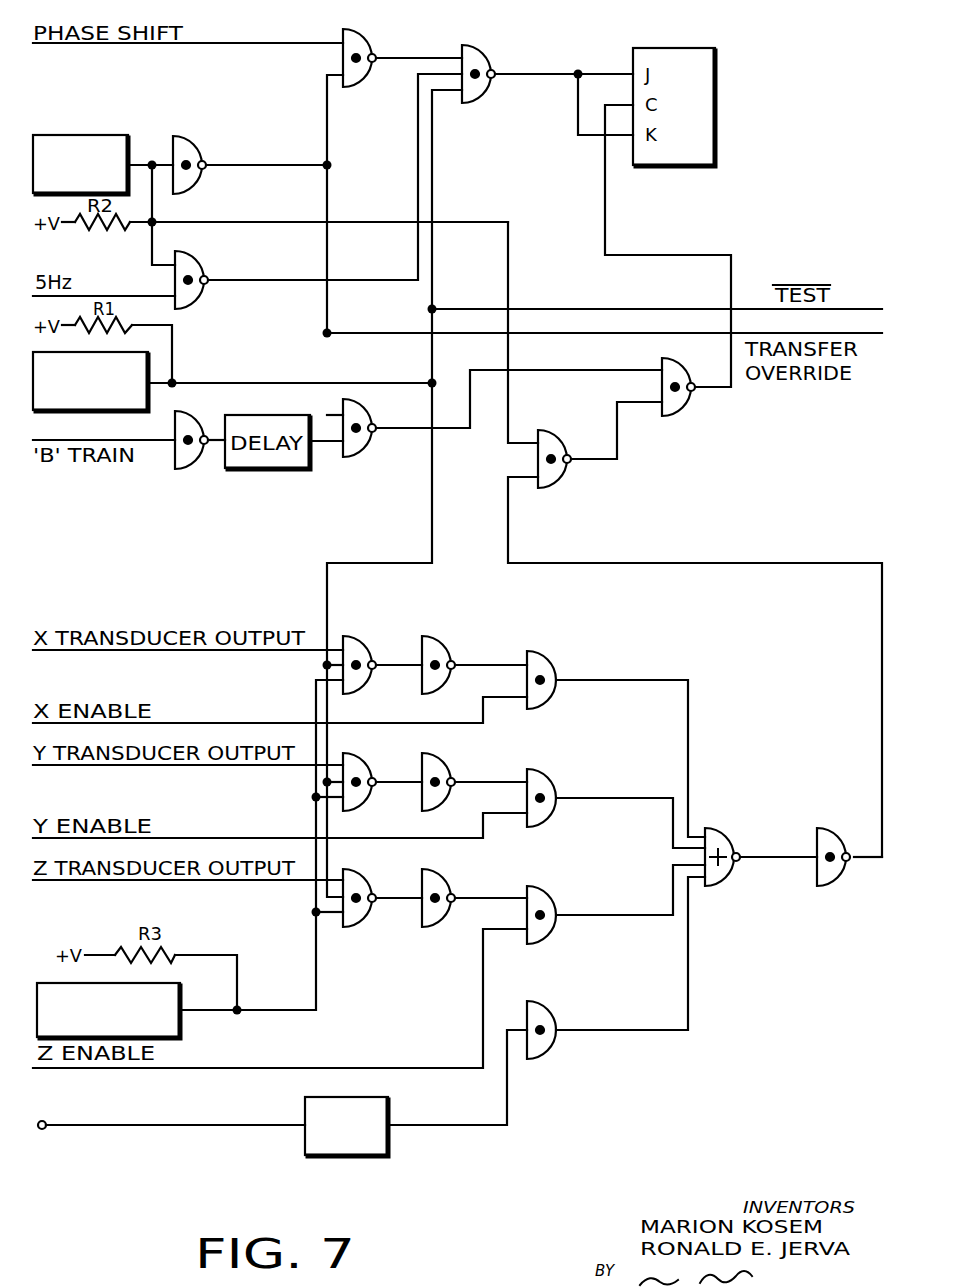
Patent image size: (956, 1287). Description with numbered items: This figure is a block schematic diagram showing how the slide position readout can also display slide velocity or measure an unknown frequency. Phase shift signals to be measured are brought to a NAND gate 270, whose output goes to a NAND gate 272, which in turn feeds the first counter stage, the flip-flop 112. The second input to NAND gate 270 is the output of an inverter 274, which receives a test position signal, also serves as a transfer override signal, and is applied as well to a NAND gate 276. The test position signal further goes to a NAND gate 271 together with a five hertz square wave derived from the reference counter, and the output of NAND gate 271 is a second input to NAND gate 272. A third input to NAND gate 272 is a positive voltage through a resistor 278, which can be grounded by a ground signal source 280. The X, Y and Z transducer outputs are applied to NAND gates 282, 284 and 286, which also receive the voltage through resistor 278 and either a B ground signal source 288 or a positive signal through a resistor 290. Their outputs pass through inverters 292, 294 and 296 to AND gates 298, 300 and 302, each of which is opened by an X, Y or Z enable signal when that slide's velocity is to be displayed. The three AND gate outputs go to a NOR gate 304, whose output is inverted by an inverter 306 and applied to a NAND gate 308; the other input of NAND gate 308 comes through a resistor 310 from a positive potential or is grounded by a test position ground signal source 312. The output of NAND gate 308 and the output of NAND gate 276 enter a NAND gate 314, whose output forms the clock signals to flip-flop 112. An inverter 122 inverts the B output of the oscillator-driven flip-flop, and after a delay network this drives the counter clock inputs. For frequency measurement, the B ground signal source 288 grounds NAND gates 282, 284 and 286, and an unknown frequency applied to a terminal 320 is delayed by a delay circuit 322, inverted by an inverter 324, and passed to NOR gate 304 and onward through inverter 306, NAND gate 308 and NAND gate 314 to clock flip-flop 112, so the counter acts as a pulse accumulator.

The flip-flop 112 is at (716, 125).
The inverter 122 is at (180, 470).
The NAND gate 270 is at (352, 88).
The NAND gate 271 is at (197, 260).
The NAND gate 272 is at (482, 100).
The inverter 274 is at (201, 142).
The NAND gate 276 is at (352, 457).
The resistor 278 is at (129, 330).
The ground signal source 280 is at (105, 412).
The NAND gate 282 is at (362, 640).
The NAND gate 284 is at (362, 757).
The NAND gate 286 is at (362, 873).
The B ground signal source 288 is at (182, 1030).
The resistor 290 is at (176, 958).
The inverter 292 is at (440, 640).
The inverter 294 is at (440, 757).
The inverter 296 is at (440, 873).
The AND gate 298 is at (537, 652).
The AND gate 300 is at (537, 770).
The AND gate 302 is at (537, 887).
The NOR gate 304 is at (726, 836).
The inverter 306 is at (838, 836).
The NAND gate 308 is at (550, 488).
The resistor 310 is at (118, 228).
The test position ground signal source 312 is at (92, 134).
The NAND gate 314 is at (676, 415).
The terminal 320 is at (47, 1122).
The delay circuit 322 is at (389, 1107).
The inverter 324 is at (537, 1002).